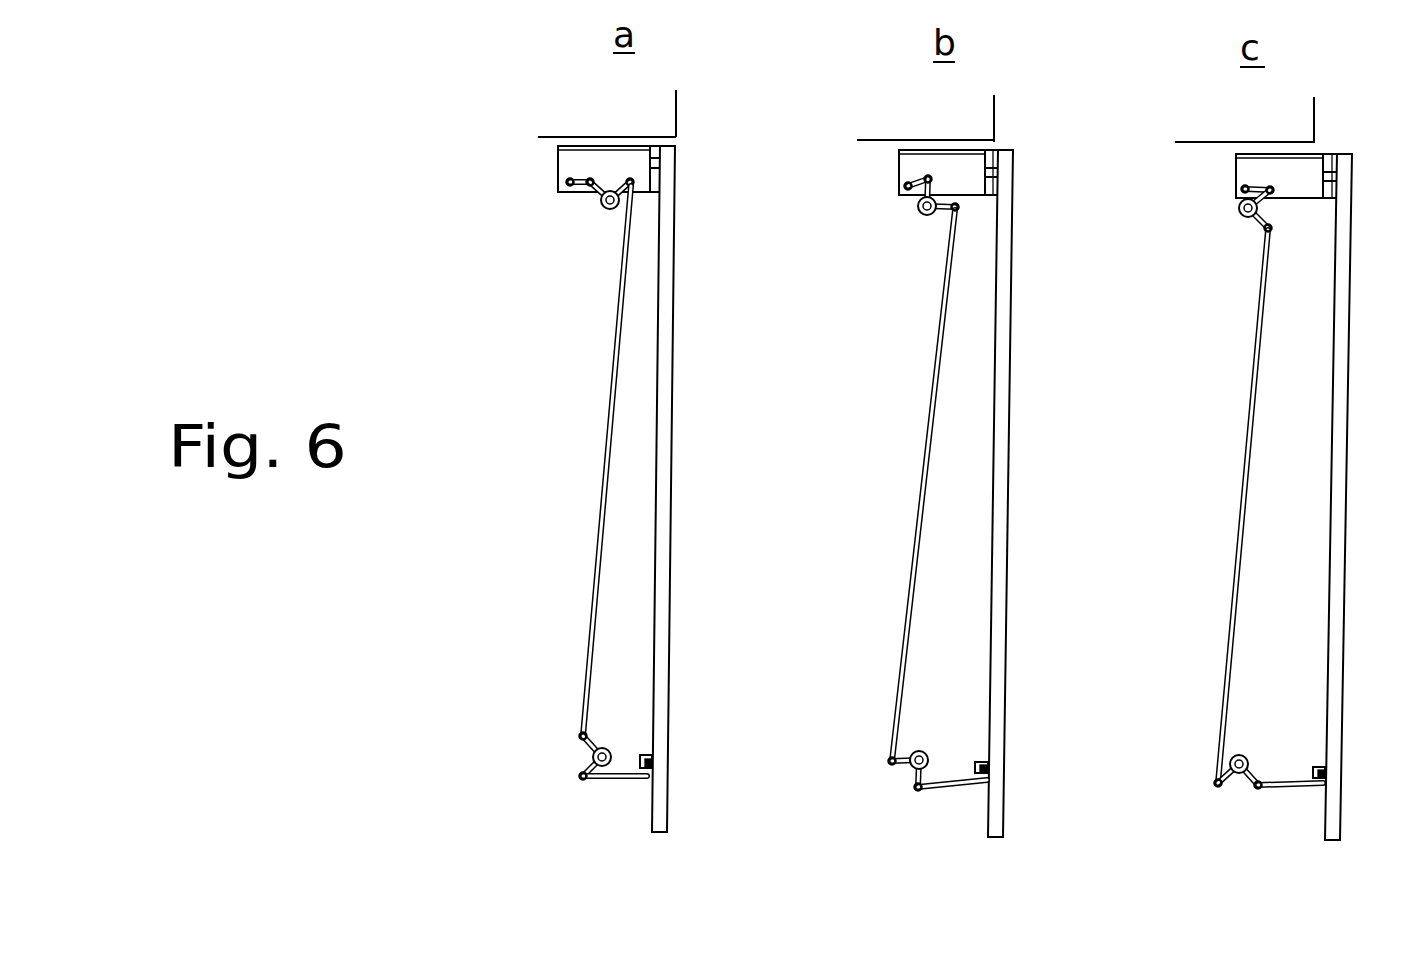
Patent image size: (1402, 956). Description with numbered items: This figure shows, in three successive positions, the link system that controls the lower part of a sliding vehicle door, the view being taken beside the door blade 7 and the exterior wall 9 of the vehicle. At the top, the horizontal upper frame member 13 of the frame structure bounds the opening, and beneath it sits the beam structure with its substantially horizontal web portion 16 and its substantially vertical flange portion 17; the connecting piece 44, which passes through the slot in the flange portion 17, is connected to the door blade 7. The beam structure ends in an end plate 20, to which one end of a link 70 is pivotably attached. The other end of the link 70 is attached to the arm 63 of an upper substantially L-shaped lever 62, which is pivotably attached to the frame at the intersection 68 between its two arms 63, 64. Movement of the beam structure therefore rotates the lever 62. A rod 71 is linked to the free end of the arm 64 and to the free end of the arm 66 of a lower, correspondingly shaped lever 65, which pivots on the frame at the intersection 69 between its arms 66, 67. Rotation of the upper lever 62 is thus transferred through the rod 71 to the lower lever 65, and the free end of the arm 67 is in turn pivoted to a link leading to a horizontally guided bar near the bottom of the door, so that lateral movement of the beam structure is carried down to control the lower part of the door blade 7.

The door blade 7 is at (667, 333).
The exterior wall 9 is at (676, 113).
The horizontal upper frame member 13 is at (540, 137).
The web portion 16 is at (607, 145).
The flange portion 17 is at (653, 157).
The end plate 20 is at (562, 158).
The second connecting piece 44 is at (660, 170).
The upper L-shaped lever 62 is at (592, 262).
The arm 63 is at (592, 198).
The arm 64 is at (632, 190).
The lower L-shaped lever 65 is at (530, 731).
The arm 66 is at (588, 742).
The arm 67 is at (585, 763).
The intersection 68 is at (608, 212).
The intersection 69 is at (608, 752).
The link 70 is at (568, 190).
The rod 71 is at (600, 515).